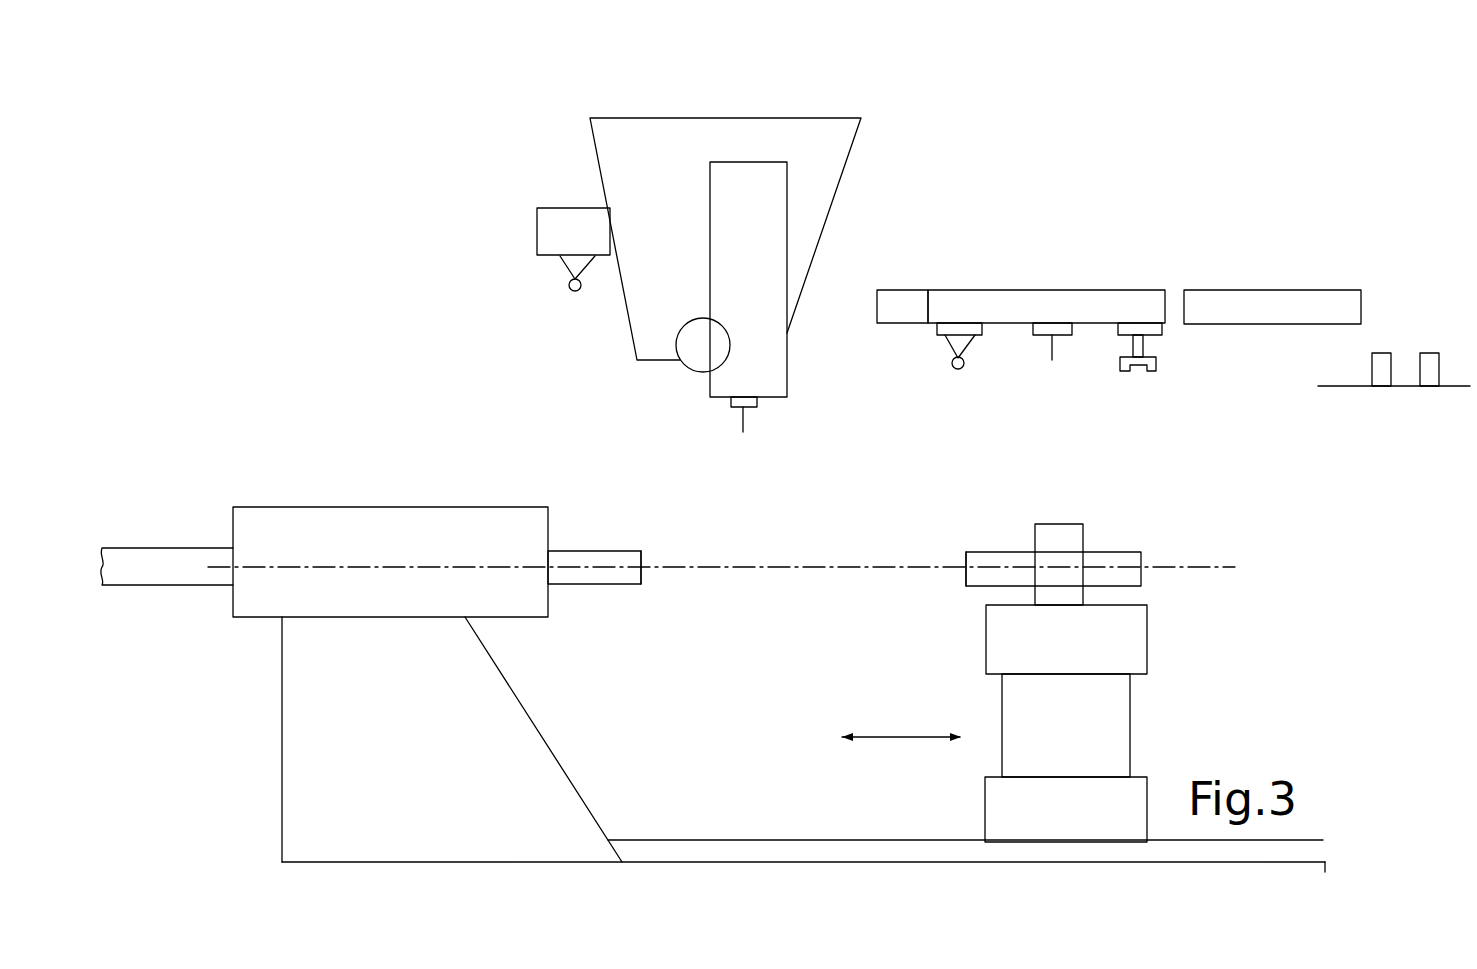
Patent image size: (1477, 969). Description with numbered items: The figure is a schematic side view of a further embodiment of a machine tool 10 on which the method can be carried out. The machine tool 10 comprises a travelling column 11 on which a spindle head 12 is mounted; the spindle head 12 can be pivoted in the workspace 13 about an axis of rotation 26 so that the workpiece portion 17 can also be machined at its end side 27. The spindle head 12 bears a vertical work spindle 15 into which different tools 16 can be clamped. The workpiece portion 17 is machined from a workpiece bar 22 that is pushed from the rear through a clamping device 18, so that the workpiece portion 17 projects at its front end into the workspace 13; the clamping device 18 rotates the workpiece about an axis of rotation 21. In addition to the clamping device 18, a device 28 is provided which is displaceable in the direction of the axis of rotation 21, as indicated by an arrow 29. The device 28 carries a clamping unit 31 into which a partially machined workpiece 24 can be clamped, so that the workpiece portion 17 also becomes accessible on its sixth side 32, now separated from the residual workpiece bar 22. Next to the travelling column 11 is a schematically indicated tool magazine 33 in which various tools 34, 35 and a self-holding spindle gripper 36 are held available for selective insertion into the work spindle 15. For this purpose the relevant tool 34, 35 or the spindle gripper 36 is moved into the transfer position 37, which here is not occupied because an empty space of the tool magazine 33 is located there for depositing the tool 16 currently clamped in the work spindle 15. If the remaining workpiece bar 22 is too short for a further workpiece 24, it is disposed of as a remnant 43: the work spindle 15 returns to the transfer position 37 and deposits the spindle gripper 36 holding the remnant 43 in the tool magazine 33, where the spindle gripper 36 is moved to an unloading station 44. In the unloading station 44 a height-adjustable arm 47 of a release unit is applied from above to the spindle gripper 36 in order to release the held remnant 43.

The machine tool 10 is at (376, 208).
The travelling column 11 is at (651, 137).
The spindle head 12 is at (760, 228).
The workspace 13 is at (803, 529).
The work spindle 15 is at (733, 409).
The tool 16 is at (748, 420).
The workpiece portion 17 is at (583, 551).
The clamping device 18 is at (328, 527).
The axis of rotation 21 is at (415, 569).
The workpiece bar 22 is at (151, 568).
The partially machined workpiece 24 is at (993, 552).
The axis of rotation 26 is at (703, 343).
The end side 27 is at (644, 573).
The device 28 is at (1102, 733).
The arrow 29 is at (895, 738).
The clamping unit 31 is at (1068, 540).
The sixth side 32 is at (962, 571).
The tool magazine 33 is at (1085, 243).
The tool 34 is at (970, 355).
The tool 35 is at (1057, 347).
The self-holding spindle gripper 36 is at (1160, 360).
The transfer position 37 is at (915, 243).
The remnant 43 is at (1380, 352).
The unloading station 44 is at (1233, 243).
The height-adjustable arm 47 is at (561, 220).